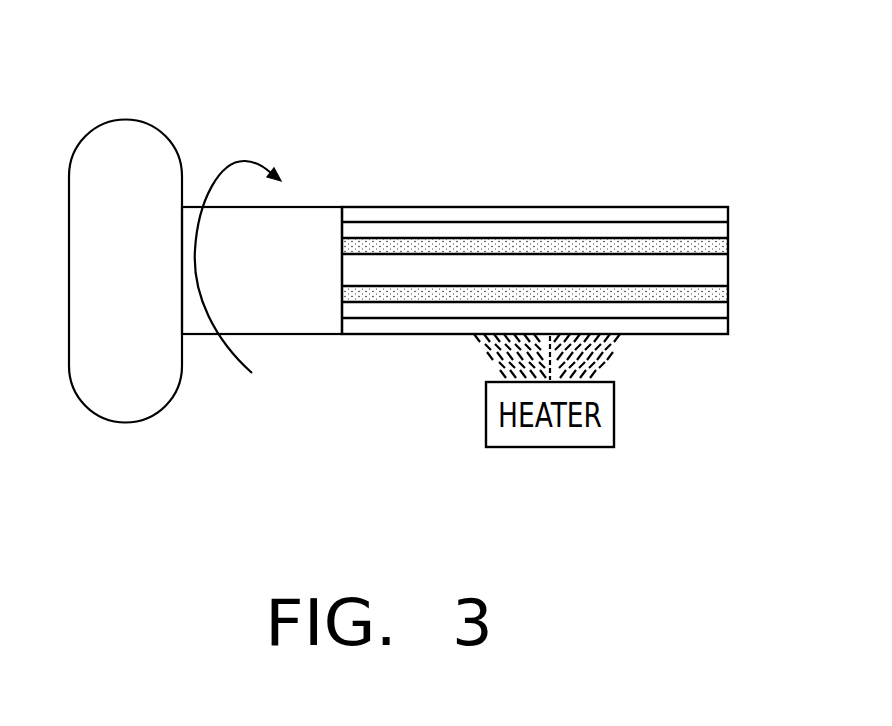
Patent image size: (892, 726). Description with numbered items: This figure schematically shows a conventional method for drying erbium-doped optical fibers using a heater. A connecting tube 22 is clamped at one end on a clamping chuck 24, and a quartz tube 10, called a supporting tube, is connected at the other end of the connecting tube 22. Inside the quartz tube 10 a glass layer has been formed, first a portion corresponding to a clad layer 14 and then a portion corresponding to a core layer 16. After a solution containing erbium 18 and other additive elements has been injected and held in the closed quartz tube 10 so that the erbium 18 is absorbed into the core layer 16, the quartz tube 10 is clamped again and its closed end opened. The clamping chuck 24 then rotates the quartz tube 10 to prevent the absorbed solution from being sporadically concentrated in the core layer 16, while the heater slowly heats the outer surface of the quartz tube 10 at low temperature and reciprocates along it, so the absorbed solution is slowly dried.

The quartz tube 10 is at (388, 218).
The clad layer 14 is at (438, 232).
The core layer 16 is at (507, 241).
The erbium 18 is at (580, 248).
The connecting tube 22 is at (312, 215).
The clamping chuck 24 is at (132, 140).